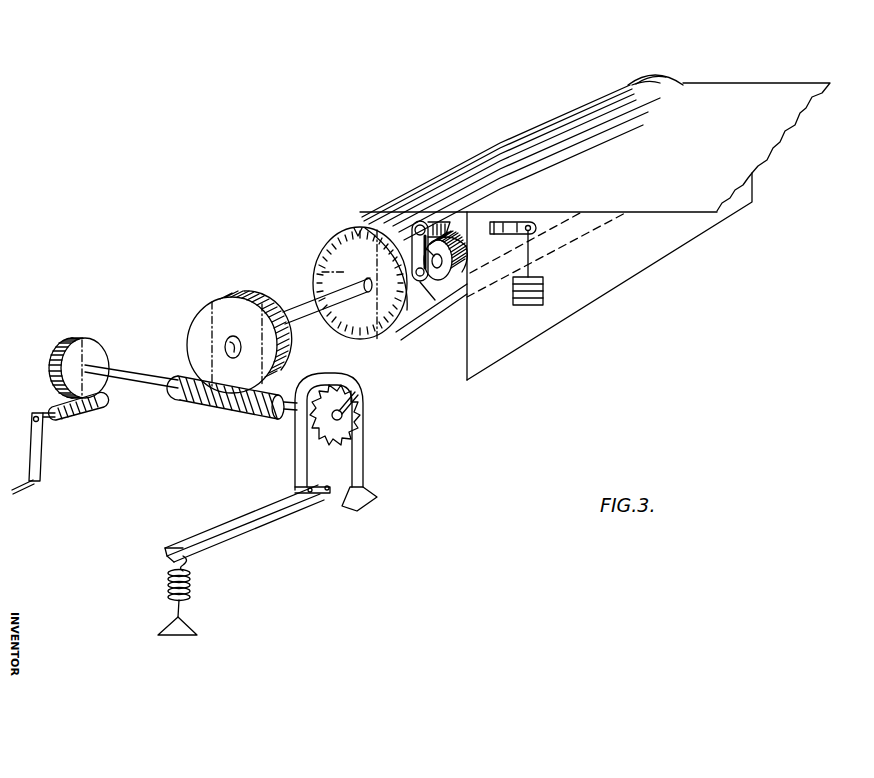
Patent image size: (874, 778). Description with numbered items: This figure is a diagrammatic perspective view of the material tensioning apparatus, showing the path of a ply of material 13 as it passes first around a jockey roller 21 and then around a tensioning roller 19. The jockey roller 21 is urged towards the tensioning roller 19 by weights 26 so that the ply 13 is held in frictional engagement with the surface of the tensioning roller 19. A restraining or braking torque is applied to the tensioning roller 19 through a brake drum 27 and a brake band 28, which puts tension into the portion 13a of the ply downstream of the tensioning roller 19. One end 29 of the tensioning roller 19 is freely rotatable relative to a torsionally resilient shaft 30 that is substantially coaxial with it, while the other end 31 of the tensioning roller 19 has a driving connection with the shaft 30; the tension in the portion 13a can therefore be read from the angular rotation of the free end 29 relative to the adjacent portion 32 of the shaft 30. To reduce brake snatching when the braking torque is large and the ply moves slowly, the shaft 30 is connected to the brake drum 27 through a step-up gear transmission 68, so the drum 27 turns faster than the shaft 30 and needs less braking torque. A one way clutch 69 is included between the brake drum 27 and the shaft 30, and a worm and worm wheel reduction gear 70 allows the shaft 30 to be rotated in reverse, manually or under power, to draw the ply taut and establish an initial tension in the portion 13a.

The portion of the ply 13a is at (732, 97).
The other end of the tensioning roller 31 is at (682, 73).
The tensioning roller 19 is at (330, 245).
The step-up gear transmission 68 is at (200, 320).
The reduction gear 70 is at (53, 350).
The torsionally resilient shaft 30 is at (310, 323).
The adjacent portion of the shaft 32 is at (370, 292).
The free end of the tensioning roller 29 is at (403, 323).
The jockey roller 21 is at (438, 282).
The weights 26 is at (535, 302).
The ply of material 13 is at (517, 338).
The one way clutch 69 is at (358, 413).
The brake drum 27 is at (355, 443).
The brake band 28 is at (290, 458).